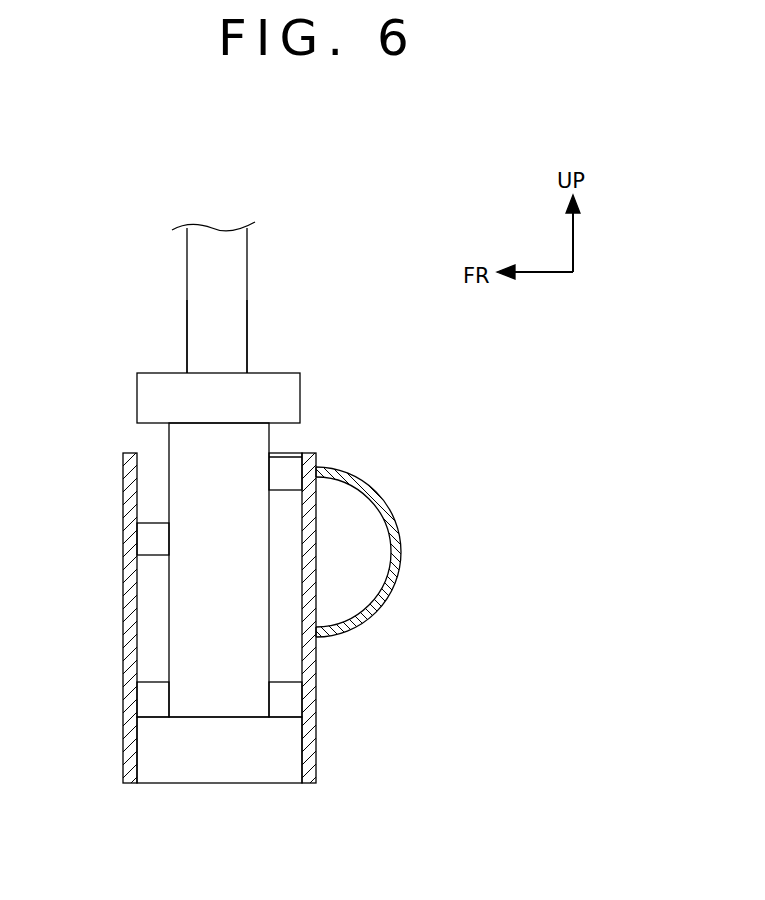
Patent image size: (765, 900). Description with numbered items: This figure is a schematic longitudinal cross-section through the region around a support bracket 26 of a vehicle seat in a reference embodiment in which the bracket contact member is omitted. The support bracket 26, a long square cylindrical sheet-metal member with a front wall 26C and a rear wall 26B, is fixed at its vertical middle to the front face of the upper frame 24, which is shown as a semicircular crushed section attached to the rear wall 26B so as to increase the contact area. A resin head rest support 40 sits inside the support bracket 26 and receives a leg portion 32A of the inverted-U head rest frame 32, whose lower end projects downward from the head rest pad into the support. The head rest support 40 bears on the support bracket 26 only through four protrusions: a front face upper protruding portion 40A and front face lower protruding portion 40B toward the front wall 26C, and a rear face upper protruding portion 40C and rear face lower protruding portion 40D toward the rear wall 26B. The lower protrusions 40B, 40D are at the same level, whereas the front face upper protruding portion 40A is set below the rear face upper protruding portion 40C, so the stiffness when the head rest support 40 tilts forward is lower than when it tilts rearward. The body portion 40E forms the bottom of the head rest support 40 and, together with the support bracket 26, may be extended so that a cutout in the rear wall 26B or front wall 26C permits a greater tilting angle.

The upper frame 24 is at (400, 546).
The support bracket 26 is at (192, 658).
The rear wall 26B is at (310, 784).
The front wall 26C is at (130, 784).
The head rest frame 32 is at (185, 265).
The leg portion 32A is at (247, 283).
The head rest support 40 is at (212, 632).
The front face upper protruding portion 40A is at (146, 538).
The front face lower protruding portion 40B is at (155, 697).
The rear face upper protruding portion 40C is at (283, 470).
The rear face lower protruding portion 40D is at (287, 697).
The body portion 40E is at (220, 707).